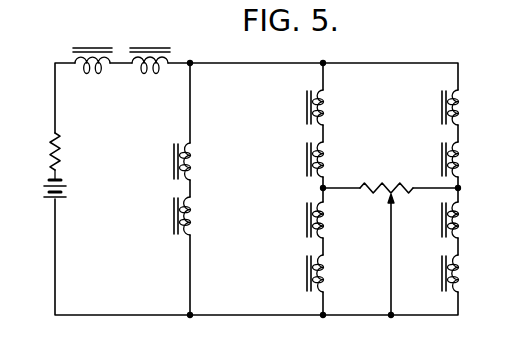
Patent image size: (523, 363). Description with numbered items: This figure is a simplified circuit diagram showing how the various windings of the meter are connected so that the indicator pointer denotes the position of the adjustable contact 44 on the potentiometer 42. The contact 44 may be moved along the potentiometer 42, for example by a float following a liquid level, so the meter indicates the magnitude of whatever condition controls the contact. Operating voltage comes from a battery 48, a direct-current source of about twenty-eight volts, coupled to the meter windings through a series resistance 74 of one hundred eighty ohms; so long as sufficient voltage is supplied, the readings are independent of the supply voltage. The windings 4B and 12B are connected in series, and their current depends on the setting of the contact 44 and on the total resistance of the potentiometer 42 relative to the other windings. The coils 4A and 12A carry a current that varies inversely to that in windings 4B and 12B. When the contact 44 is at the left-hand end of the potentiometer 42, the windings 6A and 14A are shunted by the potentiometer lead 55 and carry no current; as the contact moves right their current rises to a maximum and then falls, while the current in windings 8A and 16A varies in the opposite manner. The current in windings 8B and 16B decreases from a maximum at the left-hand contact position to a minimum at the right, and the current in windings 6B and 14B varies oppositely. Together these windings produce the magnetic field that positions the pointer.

The winding 4B is at (88, 69).
The winding 12B is at (146, 69).
The coil 4A is at (191, 160).
The coil 12A is at (191, 222).
The winding 8B is at (324, 104).
The winding 16B is at (324, 153).
The winding 6A is at (324, 228).
The winding 14A is at (324, 270).
The winding 6B is at (459, 103).
The winding 14B is at (459, 158).
The winding 8A is at (459, 216).
The winding 16A is at (459, 270).
The series resistance 74 is at (50, 150).
The battery 48 is at (44, 188).
The potentiometer 42 is at (388, 185).
The adjustable contact 44 is at (388, 198).
The potentiometer lead 55 is at (393, 241).